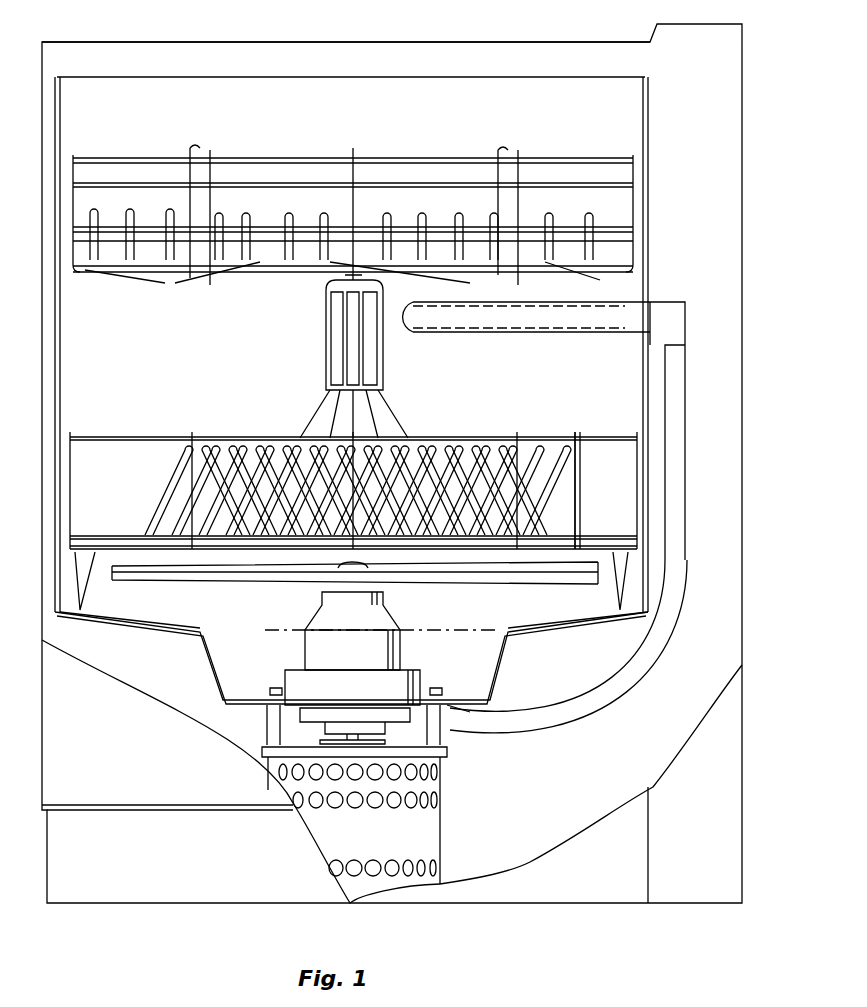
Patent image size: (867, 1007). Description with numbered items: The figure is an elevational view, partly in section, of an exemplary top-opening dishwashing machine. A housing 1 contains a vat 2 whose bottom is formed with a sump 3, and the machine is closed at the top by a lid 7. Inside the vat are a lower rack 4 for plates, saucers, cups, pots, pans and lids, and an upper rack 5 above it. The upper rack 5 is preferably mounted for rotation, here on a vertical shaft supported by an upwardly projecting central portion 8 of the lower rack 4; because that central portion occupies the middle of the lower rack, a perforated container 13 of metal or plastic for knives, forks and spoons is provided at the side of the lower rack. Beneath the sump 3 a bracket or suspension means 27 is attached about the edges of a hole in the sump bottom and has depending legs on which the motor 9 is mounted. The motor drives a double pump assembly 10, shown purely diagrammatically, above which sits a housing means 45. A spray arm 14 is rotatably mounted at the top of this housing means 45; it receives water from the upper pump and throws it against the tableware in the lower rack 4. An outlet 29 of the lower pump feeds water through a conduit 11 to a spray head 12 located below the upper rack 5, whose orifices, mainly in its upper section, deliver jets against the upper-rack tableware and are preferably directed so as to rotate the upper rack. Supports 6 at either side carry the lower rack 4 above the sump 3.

The housing 1 is at (48, 740).
The vat 2 is at (62, 362).
The sump 3 is at (212, 665).
The lower rack 4 is at (205, 437).
The upper rack 5 is at (272, 160).
The rack support 6 is at (76, 590).
The lid 7 is at (375, 48).
The upwardly projecting central portion 8 is at (383, 370).
The motor 9 is at (434, 836).
The double pump assembly 10 is at (300, 688).
The conduit 11 is at (655, 672).
The spray head 12 is at (532, 316).
The perforated container 13 is at (578, 480).
The spray arm 14 is at (258, 577).
The bracket or suspension means 27 is at (437, 735).
The outlet 29 is at (465, 714).
The housing means 45 is at (360, 662).